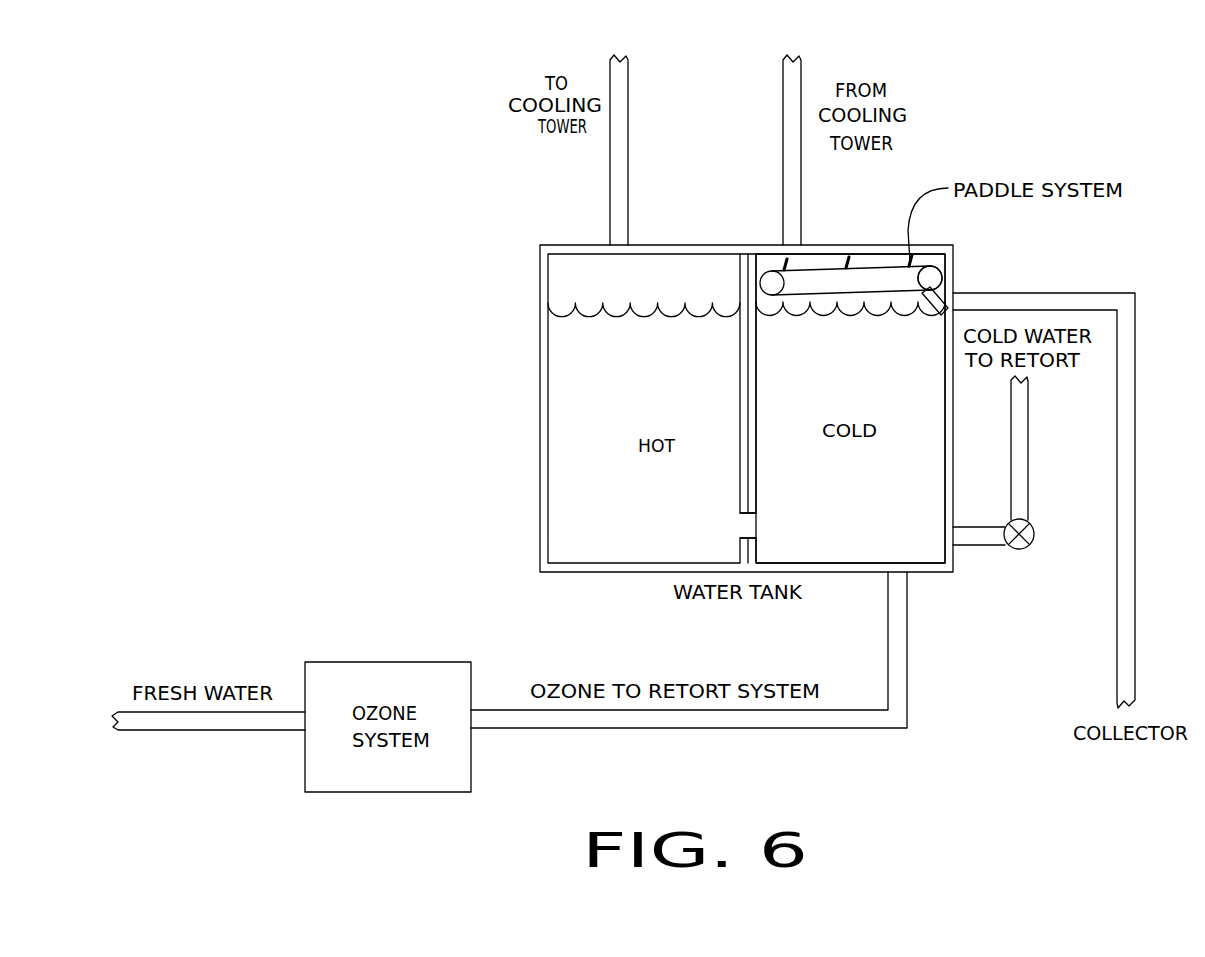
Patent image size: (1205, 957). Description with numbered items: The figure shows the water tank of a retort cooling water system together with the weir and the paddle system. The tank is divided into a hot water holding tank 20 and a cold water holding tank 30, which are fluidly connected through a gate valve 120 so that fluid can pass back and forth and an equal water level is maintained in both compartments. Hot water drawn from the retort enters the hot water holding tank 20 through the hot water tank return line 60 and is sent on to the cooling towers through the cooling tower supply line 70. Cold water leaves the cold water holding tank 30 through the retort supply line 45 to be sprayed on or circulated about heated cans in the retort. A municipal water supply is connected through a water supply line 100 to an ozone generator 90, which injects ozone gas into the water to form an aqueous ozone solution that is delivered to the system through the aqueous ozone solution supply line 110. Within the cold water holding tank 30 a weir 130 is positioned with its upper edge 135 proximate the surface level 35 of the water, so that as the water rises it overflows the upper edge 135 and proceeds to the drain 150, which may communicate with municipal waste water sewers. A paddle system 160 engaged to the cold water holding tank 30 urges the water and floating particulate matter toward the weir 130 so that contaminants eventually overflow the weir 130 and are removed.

The hot water holding tank 20 is at (540, 462).
The cold water holding tank 30 is at (940, 575).
The surface level 35 is at (852, 303).
The retort supply line 45 is at (1030, 455).
The hot water tank return line 60 is at (802, 213).
The cooling tower supply line 70 is at (610, 183).
The ozone generator 90 is at (368, 794).
The water supply line 100 is at (218, 733).
The aqueous ozone solution supply line 110 is at (615, 730).
The gate valve 120 is at (743, 530).
The weir 130 is at (950, 302).
The upper edge 135 is at (936, 276).
The drain 150 is at (1105, 292).
The paddle system 160 is at (880, 219).